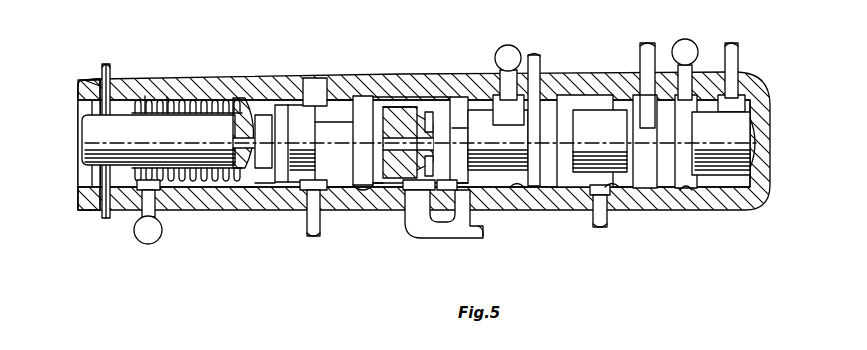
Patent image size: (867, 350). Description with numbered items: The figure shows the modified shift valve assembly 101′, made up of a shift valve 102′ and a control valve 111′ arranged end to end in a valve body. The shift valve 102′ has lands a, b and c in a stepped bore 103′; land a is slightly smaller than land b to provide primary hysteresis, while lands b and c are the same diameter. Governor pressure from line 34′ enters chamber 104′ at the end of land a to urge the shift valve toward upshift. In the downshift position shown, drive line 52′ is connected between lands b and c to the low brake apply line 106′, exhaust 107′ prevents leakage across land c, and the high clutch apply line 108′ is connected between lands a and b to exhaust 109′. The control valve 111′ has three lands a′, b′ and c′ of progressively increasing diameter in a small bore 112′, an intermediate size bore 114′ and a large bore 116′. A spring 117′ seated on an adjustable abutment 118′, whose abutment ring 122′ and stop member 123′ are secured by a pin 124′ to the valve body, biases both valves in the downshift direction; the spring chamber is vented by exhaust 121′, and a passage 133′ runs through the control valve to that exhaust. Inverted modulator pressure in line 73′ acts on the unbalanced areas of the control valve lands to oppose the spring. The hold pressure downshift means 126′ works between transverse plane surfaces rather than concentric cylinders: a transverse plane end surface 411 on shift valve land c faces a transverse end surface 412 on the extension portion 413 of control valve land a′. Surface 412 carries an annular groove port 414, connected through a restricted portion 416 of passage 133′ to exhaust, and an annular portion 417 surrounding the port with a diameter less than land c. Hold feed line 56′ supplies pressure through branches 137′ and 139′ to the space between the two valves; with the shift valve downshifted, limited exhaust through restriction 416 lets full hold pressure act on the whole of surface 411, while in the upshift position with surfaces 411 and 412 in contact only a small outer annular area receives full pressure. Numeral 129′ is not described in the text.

The modified shift valve assembly 101′ is at (276, 78).
The shift valve 102′ is at (647, 150).
The stepped bore 103′ is at (673, 190).
The chamber 104′ is at (773, 188).
The low brake apply line 106′ is at (540, 68).
The exhaust 107′ is at (510, 45).
The high clutch apply line 108′ is at (643, 60).
The exhaust 109′ is at (695, 40).
The control valve 111′ is at (348, 162).
The small bore 112′ is at (370, 110).
The intermediate size bore 114′ is at (333, 104).
The large bore 116′ is at (192, 100).
The spring 117′ is at (167, 97).
The adjustable abutment 118′ is at (128, 82).
The exhaust 121′ is at (134, 243).
The abutment ring 122′ is at (112, 212).
The stop member 123′ is at (192, 178).
The pin 124′ is at (100, 82).
The hold pressure downshift means 126′ is at (418, 78).
The spring retainer 129′ is at (145, 96).
The passage 133′ is at (200, 162).
The branch 137′ is at (450, 212).
The branch 139′ is at (412, 218).
The governor pressure line 34′ is at (740, 55).
The transverse plane end surface 411 is at (465, 128).
The transverse end surface 412 is at (455, 140).
The extension portion 413 is at (423, 110).
The annular groove port 414 is at (437, 110).
The restricted portion 416 is at (348, 160).
The annular portion 417 is at (457, 177).
The drive line 52′ is at (595, 218).
The hold feed line 56′ is at (470, 232).
The inverted modulator pressure line 73′ is at (312, 235).
The land a is at (370, 184).
The land a a′ is at (740, 128).
The land b is at (253, 177).
The land b b′ is at (613, 180).
The land c is at (255, 200).
The land c c′ is at (517, 197).